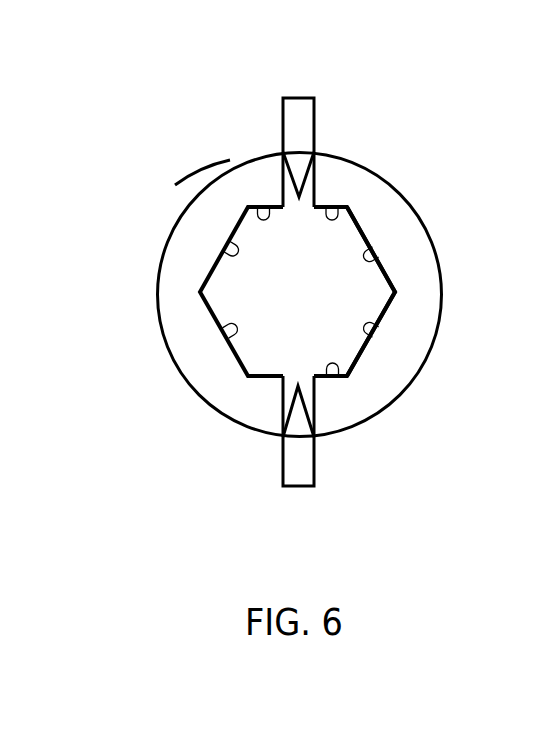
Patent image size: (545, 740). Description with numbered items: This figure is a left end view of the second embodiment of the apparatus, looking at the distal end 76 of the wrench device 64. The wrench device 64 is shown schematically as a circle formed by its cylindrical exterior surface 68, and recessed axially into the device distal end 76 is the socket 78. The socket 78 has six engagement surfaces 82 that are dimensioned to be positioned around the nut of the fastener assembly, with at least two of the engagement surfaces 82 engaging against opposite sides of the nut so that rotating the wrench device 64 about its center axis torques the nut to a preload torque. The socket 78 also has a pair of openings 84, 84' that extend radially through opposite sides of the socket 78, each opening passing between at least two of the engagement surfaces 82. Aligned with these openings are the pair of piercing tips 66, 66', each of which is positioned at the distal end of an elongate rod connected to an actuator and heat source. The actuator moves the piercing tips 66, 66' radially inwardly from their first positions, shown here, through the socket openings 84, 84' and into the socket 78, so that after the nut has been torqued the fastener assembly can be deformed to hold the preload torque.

The wrench device 64 is at (158, 272).
The cylindrical exterior surface 68 is at (190, 200).
The distal end 76 is at (175, 315).
The socket 78 is at (352, 240).
The piercing tip 66 is at (340, 152).
The piercing tip 66' is at (233, 431).
The opening 84 is at (258, 125).
The opening 84' is at (250, 453).
The engagement surfaces 82 is at (261, 205).